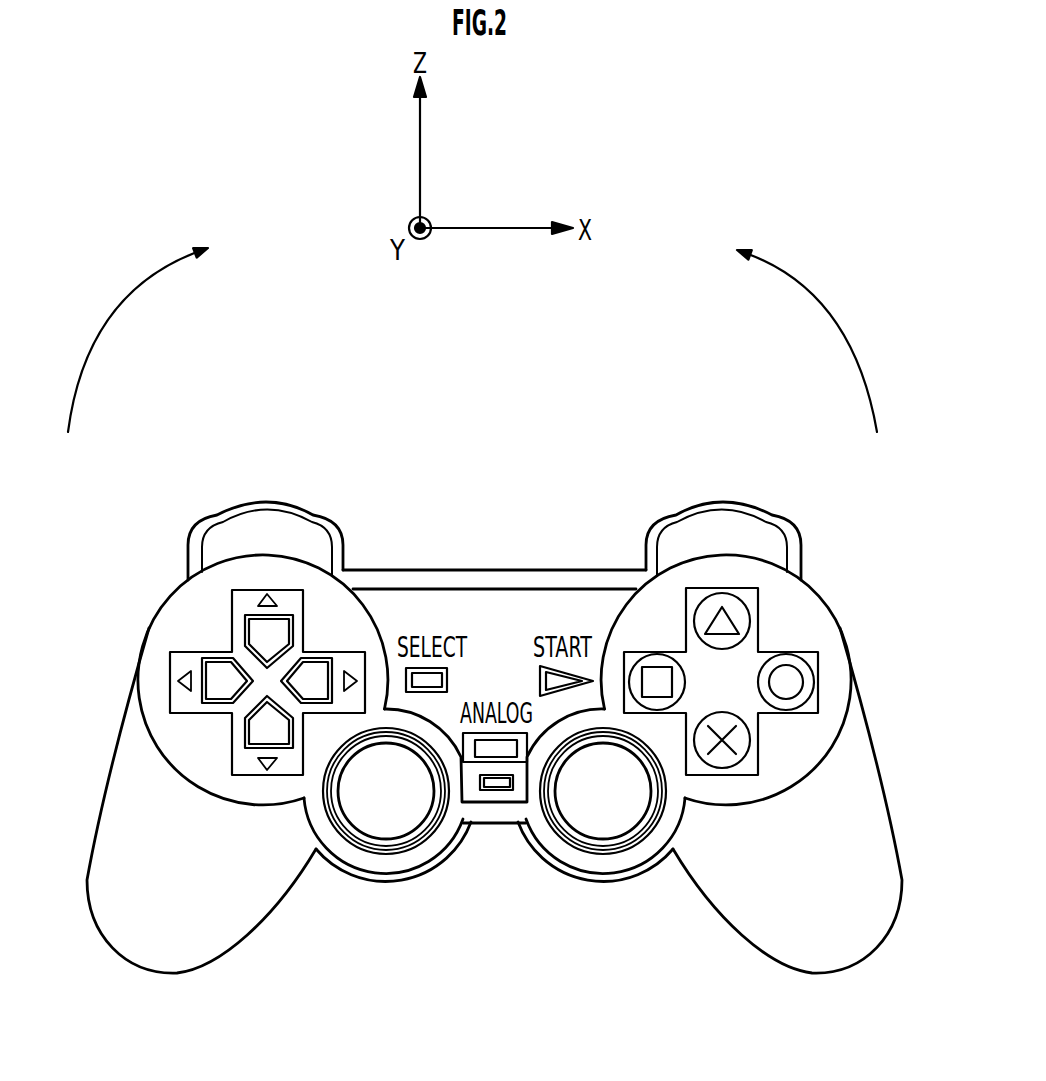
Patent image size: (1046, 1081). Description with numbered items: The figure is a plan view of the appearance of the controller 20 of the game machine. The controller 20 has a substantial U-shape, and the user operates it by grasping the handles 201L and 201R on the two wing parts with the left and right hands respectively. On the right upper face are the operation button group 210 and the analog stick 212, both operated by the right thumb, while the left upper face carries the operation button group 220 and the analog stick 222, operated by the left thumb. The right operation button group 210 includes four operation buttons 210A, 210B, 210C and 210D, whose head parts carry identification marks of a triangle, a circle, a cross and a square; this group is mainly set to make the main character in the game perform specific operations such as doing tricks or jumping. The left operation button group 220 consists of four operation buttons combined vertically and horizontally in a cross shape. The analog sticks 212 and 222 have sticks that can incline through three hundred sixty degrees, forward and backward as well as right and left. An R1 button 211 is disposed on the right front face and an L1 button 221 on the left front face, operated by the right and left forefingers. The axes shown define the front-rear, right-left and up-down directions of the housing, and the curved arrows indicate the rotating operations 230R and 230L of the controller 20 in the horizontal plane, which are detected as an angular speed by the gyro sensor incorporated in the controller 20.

The controller 20 is at (866, 568).
The handle 201L is at (233, 922).
The handle 201R is at (798, 927).
The operation button group 210 is at (743, 684).
The operation button 210A is at (733, 607).
The operation button 210B is at (803, 675).
The operation button 210C is at (722, 758).
The operation button 210D is at (653, 660).
The R1 button 211 is at (721, 500).
The analog stick 212 is at (580, 825).
The operation button group 220 is at (212, 633).
The L1 button 221 is at (267, 500).
The analog stick 222 is at (415, 825).
The rotating operation 230L is at (138, 340).
The rotating operation 230R is at (807, 341).